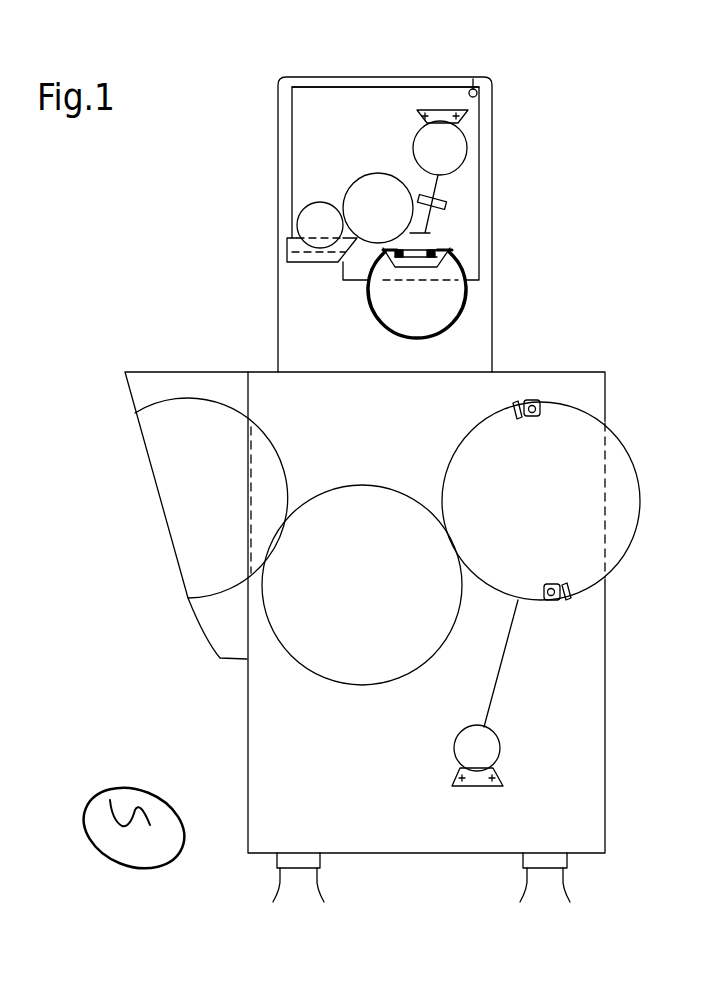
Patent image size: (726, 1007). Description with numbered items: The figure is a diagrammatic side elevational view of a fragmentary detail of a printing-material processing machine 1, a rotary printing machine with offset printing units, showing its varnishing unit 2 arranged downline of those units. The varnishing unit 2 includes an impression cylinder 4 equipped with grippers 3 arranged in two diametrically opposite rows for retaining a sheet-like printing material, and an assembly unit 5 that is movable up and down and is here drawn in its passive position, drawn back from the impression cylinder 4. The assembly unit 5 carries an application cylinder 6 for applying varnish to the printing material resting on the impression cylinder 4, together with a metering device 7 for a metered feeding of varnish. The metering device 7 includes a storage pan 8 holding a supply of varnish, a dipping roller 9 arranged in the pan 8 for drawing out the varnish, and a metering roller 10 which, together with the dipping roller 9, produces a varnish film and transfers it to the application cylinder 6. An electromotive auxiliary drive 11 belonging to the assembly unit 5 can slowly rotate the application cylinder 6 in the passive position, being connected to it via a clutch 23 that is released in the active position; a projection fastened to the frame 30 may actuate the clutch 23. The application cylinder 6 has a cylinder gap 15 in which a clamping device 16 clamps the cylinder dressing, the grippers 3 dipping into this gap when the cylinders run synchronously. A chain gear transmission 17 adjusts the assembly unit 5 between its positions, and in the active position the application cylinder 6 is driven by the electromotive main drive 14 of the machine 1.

The printing-material processing machine 1 is at (173, 372).
The varnishing unit 2 is at (334, 224).
The frame 30 is at (278, 155).
The grippers 3 is at (556, 603).
The impression cylinder 4 is at (632, 458).
The assembly unit 5 is at (332, 85).
The application cylinder 6 is at (372, 310).
The metering device 7 is at (282, 263).
The storage pan 8 is at (312, 264).
The dipping roller 9 is at (320, 201).
The metering roller 10 is at (370, 174).
The electromotive auxiliary drive 11 is at (467, 152).
The electromotive main drive 14 is at (498, 747).
The cylinder gap 15 is at (420, 243).
The clamping device 16 is at (435, 258).
The chain gear transmission 17 is at (487, 80).
The clutch 23 is at (447, 204).